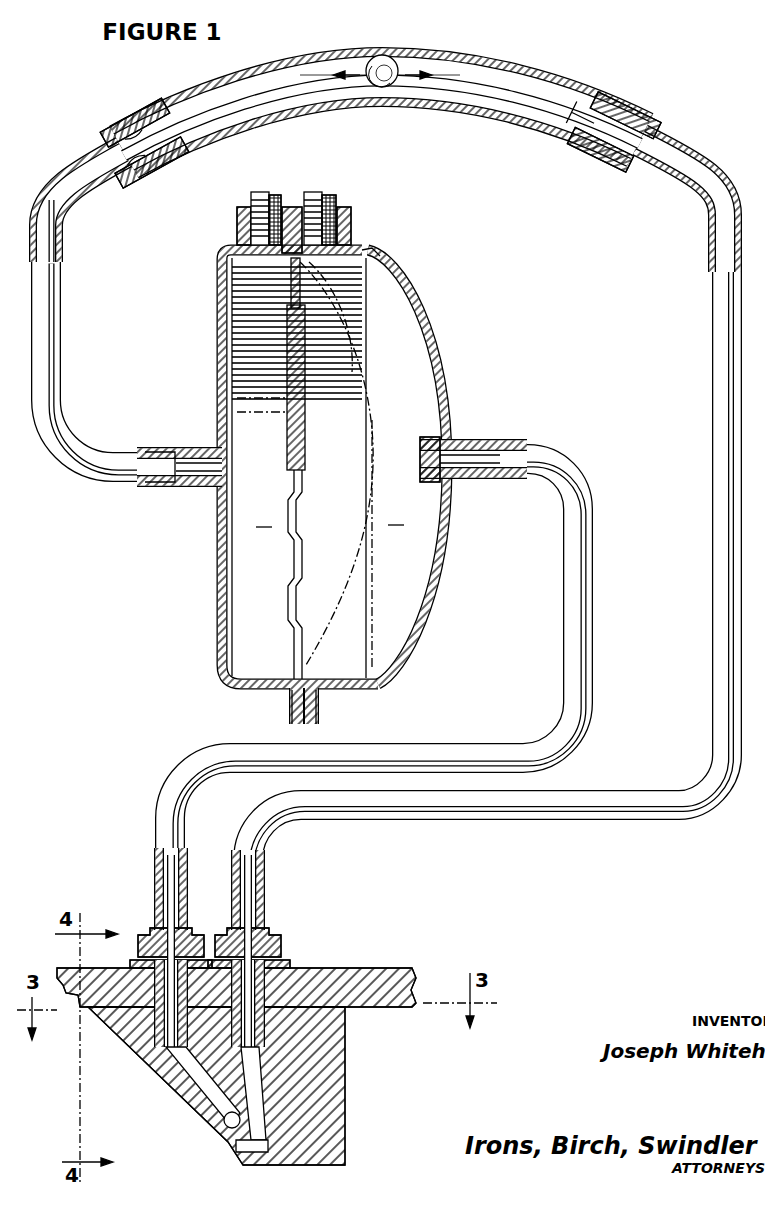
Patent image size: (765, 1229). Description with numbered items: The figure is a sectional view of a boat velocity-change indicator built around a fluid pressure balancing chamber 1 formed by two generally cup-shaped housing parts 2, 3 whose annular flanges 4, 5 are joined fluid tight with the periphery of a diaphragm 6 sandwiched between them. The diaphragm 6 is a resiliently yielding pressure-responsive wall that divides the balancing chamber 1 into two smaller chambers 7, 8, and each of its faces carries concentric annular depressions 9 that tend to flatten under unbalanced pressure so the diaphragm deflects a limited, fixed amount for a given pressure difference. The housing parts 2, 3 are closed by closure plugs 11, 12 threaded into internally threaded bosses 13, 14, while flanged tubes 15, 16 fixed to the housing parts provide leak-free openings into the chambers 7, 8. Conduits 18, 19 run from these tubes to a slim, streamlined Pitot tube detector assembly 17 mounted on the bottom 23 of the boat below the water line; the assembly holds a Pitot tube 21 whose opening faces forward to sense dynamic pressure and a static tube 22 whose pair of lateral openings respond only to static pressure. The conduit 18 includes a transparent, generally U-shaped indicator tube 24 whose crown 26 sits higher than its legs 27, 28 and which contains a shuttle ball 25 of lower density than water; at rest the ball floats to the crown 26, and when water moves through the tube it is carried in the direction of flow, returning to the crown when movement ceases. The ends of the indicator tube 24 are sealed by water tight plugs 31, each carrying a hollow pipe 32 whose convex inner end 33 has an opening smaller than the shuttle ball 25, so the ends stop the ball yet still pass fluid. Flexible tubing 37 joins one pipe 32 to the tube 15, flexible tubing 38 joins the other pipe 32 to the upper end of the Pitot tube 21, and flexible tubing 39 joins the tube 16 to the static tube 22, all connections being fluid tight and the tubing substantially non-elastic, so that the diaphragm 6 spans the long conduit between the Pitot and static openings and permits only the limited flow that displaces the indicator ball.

The fluid pressure balancing chamber 1 is at (404, 285).
The housing part 2 is at (218, 337).
The housing part 3 is at (422, 332).
The annular flange 4 is at (289, 710).
The annular flange 5 is at (318, 712).
The diaphragm 6 is at (288, 564).
The smaller chamber 7 is at (297, 394).
The smaller chamber 8 is at (352, 468).
The concentric annular depressions 9 is at (292, 335).
The closure plug 11 is at (258, 192).
The closure plug 12 is at (312, 192).
The internally threaded boss 13 is at (237, 222).
The internally threaded boss 14 is at (351, 210).
The flanged tube 15 is at (203, 470).
The flanged tube 16 is at (440, 445).
The Pitot tube detector assembly 17 is at (347, 1079).
The conduit 18 is at (64, 300).
The conduit 19 is at (594, 565).
The Pitot tube 21 is at (262, 1078).
The static tube 22 is at (205, 1090).
The bottom of a boat 23 is at (332, 968).
The indicator tube 24 is at (468, 53).
The shuttle ball 25 is at (200, 92).
The crown 26 is at (382, 54).
The leg 27 is at (233, 88).
The leg 28 is at (553, 76).
The water tight plug 31 is at (166, 165).
The hollow pipe 32 is at (150, 132).
The inner end 33 is at (195, 135).
The flexible tubing 37 is at (64, 242).
The flexible tubing 38 is at (708, 246).
The flexible tubing 39 is at (156, 870).